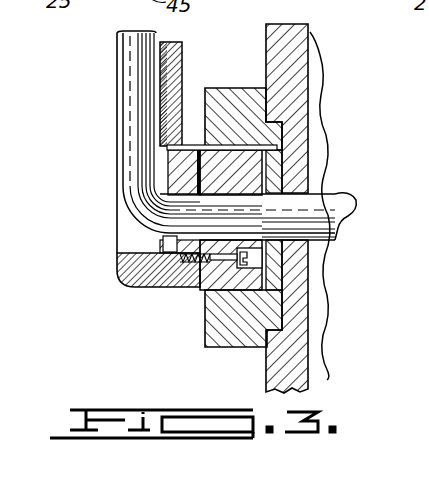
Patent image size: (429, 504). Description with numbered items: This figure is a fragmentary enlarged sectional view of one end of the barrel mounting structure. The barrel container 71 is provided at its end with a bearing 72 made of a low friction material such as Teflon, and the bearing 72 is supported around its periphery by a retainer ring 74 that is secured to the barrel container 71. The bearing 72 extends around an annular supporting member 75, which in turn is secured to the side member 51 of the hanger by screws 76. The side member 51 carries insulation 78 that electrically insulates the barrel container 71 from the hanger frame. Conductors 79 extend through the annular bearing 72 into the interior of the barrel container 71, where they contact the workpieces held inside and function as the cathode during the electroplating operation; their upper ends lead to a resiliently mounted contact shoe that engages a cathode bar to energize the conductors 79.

The side member 51 is at (123, 232).
The barrel container 71 is at (316, 97).
The bearing 72 is at (209, 146).
The retainer ring 74 is at (243, 96).
The annular supporting member 75 is at (250, 173).
The screws 76 is at (213, 270).
The insulation 78 is at (184, 56).
The conductors 79 is at (127, 144).